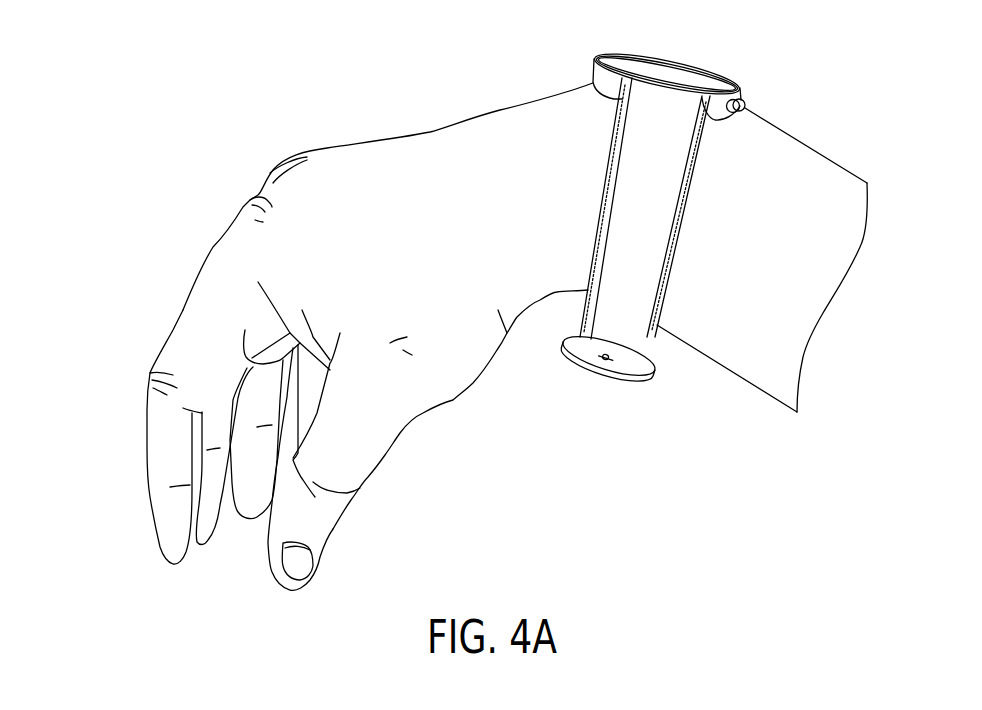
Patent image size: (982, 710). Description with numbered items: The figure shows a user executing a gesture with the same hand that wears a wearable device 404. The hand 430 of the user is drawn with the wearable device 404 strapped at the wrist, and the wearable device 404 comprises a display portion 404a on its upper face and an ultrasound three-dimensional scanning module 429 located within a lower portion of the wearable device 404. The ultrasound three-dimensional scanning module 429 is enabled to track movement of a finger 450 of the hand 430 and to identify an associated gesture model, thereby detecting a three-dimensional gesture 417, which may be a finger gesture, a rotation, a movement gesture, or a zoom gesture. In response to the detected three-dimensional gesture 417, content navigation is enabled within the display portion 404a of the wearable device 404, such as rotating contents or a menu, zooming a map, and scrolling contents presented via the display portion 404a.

The wearable device 404 is at (593, 64).
The display portion 404a is at (667, 62).
The ultrasound three-dimensional scanning module 429 is at (628, 393).
The hand 430 is at (327, 148).
The finger 450 is at (122, 323).
The three-dimensional gesture 417 is at (137, 558).